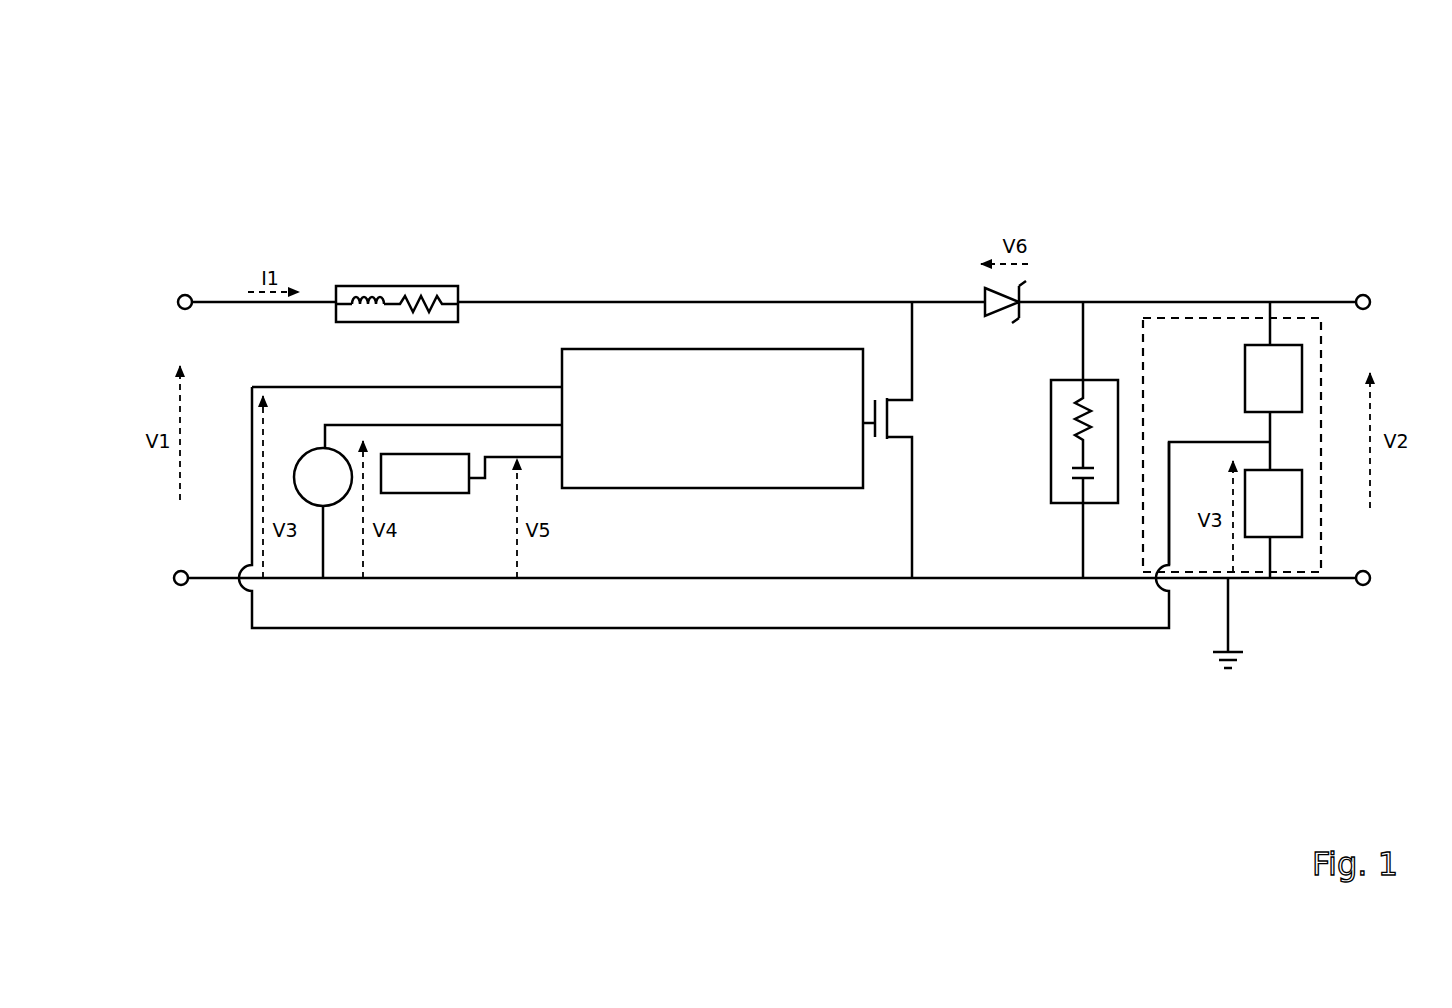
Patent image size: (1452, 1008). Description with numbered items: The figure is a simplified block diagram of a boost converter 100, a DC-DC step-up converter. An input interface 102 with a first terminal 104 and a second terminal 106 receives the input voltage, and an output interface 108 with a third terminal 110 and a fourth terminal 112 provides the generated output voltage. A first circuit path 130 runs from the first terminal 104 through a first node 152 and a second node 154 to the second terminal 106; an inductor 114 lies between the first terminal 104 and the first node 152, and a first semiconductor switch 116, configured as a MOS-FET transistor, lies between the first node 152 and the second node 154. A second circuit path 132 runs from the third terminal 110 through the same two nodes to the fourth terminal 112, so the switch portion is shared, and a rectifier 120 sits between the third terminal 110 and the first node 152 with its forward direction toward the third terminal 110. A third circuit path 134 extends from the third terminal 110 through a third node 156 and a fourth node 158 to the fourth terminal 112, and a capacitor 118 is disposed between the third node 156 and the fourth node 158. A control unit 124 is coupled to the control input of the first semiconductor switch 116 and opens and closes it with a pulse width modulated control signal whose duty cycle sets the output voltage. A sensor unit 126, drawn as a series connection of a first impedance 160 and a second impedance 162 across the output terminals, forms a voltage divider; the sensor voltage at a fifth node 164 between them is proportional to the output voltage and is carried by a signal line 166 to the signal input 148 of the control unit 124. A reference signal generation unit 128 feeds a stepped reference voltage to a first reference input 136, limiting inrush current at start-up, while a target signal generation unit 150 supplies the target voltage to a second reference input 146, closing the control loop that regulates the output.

The boost converter 100 is at (841, 108).
The input interface 102 is at (157, 335).
The first terminal 104 is at (187, 283).
The second terminal 106 is at (183, 600).
The output interface 108 is at (1396, 350).
The third terminal 110 is at (1368, 278).
The fourth terminal 112 is at (1367, 598).
The inductor 114 is at (418, 280).
The first semiconductor switch 116 is at (935, 432).
The capacitor 118 is at (1037, 493).
The rectifier 120 is at (970, 296).
The control unit 124 is at (745, 460).
The sensor unit 126 is at (1138, 326).
The reference signal generation unit 128 is at (420, 478).
The first circuit path 130 is at (718, 298).
The second circuit path 132 is at (1214, 294).
The third circuit path 134 is at (1074, 343).
The first reference input 136 is at (569, 458).
The second reference input 146 is at (574, 423).
The signal input 148 is at (550, 378).
The target signal generation unit 150 is at (322, 490).
The first node 152 is at (908, 297).
The second node 154 is at (911, 582).
The third node 156 is at (1081, 298).
The fourth node 158 is at (1085, 583).
The first impedance 160 is at (1305, 333).
The second impedance 162 is at (1297, 545).
The fifth node 164 is at (1280, 442).
The signal line 166 is at (710, 630).